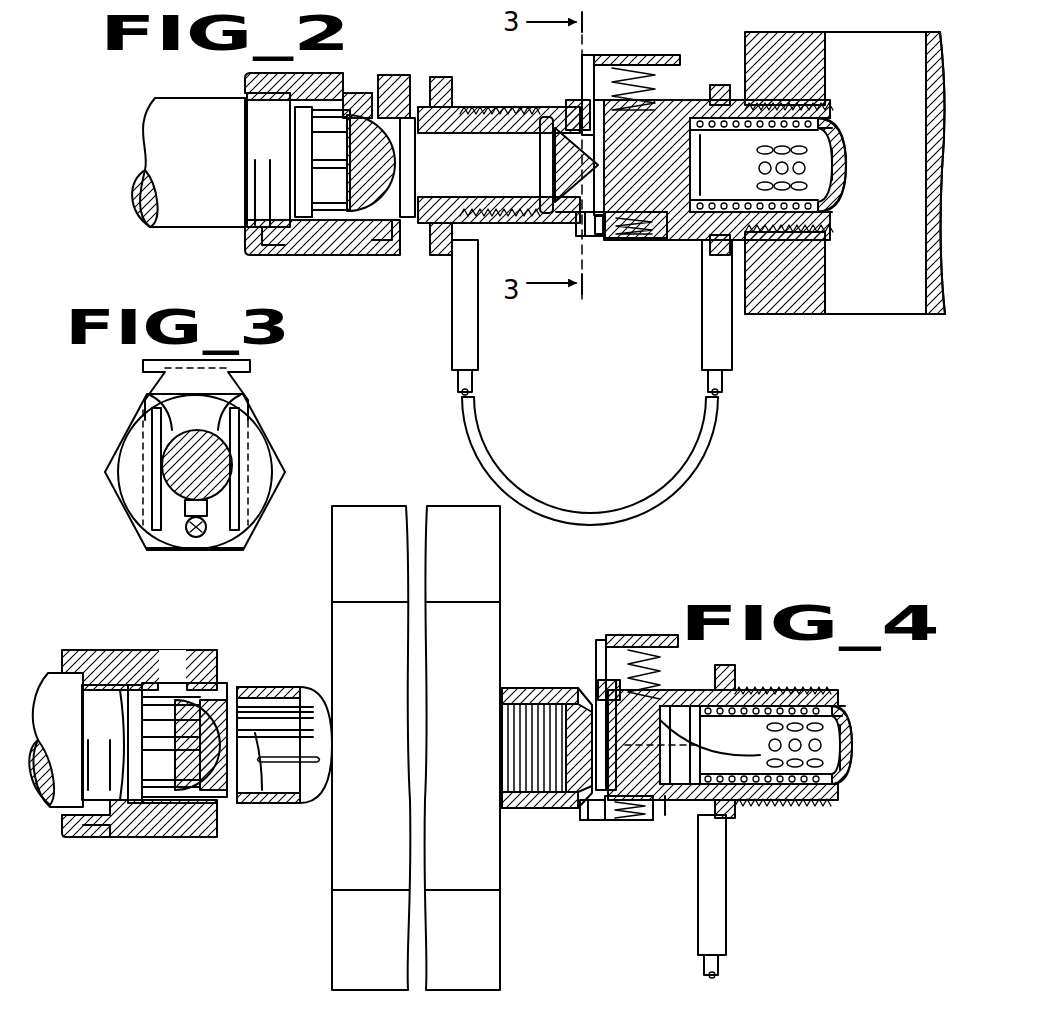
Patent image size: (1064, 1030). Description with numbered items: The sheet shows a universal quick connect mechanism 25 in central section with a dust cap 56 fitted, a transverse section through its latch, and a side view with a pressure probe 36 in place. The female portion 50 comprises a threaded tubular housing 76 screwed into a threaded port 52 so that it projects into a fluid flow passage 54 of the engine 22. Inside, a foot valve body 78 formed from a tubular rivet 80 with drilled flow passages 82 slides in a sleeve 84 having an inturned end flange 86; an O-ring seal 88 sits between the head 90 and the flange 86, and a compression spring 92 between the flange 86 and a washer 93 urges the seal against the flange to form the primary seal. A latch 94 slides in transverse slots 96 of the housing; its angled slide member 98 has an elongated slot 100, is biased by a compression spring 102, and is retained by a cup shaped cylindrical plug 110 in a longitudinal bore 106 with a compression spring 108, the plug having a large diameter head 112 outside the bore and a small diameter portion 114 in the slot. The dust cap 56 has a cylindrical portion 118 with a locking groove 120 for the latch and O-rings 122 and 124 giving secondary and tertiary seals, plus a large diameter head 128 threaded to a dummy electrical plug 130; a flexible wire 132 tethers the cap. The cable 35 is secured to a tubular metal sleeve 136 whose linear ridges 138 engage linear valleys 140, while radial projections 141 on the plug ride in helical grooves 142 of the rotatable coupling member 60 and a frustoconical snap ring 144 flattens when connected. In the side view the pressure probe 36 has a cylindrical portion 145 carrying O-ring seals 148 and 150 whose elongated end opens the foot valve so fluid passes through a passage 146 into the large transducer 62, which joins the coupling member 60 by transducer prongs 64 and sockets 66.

In FIG. 2, the engine 22 is at (805, 318).
In FIG. 2, the quick connect mechanism 25 is at (213, 251).
In FIG. 4, the quick connect mechanism 25 is at (754, 857).
In FIG. 2, the cable 35 is at (162, 103).
In FIG. 4, the cable 35 is at (64, 812).
In FIG. 4, the pressure probe 36 is at (503, 686).
In FIG. 2, the female portion 50 is at (701, 93).
In FIG. 4, the female portion 50 is at (796, 681).
In FIG. 2, the threaded port 52 is at (828, 245).
In FIG. 2, the fluid flow passage 54 is at (830, 318).
In FIG. 2, the dust cap 56 is at (441, 76).
In FIG. 2, the coupling member 60 is at (242, 80).
In FIG. 4, the coupling member 60 is at (117, 647).
In FIG. 4, the transducer 62 is at (365, 993).
In FIG. 4, the transducer prongs 64 is at (333, 744).
In FIG. 4, the sockets 66 is at (177, 743).
In FIG. 2, the threaded tubular housing 76 is at (720, 86).
In FIG. 3, the threaded tubular housing 76 is at (262, 452).
In FIG. 4, the threaded tubular housing 76 is at (722, 668).
In FIG. 2, the foot valve body 78 is at (851, 163).
In FIG. 4, the foot valve body 78 is at (858, 745).
In FIG. 2, the tubular rivet 80 is at (713, 198).
In FIG. 4, the tubular rivet 80 is at (770, 812).
In FIG. 2, the flow passages 82 is at (800, 168).
In FIG. 4, the flow passages 82 is at (832, 786).
In FIG. 2, the sleeve 84 is at (822, 220).
In FIG. 4, the sleeve 84 is at (835, 698).
In FIG. 2, the inturned end flange 86 is at (832, 120).
In FIG. 4, the inturned end flange 86 is at (846, 714).
In FIG. 2, the O-ring seal 88 is at (838, 130).
In FIG. 4, the O-ring seal 88 is at (852, 728).
In FIG. 2, the head 90 is at (848, 182).
In FIG. 4, the head 90 is at (854, 768).
In FIG. 2, the compression spring 92 is at (822, 120).
In FIG. 4, the compression spring 92 is at (812, 802).
In FIG. 2, the washer 93 is at (668, 235).
In FIG. 4, the washer 93 is at (668, 812).
In FIG. 2, the latch 94 is at (588, 51).
In FIG. 3, the latch 94 is at (258, 362).
In FIG. 4, the latch 94 is at (593, 641).
In FIG. 3, the transverse slots 96 is at (155, 412).
In FIG. 2, the angled slide member 98 is at (593, 102).
In FIG. 3, the angled slide member 98 is at (165, 385).
In FIG. 4, the angled slide member 98 is at (598, 662).
In FIG. 2, the elongated slot 100 is at (572, 108).
In FIG. 3, the elongated slot 100 is at (162, 436).
In FIG. 4, the elongated slot 100 is at (610, 692).
In FIG. 2, the compression spring 102 is at (640, 64).
In FIG. 4, the compression spring 102 is at (650, 634).
In FIG. 2, the longitudinal bore 106 is at (625, 240).
In FIG. 4, the longitudinal bore 106 is at (612, 822).
In FIG. 2, the compression spring 108 is at (660, 238).
In FIG. 4, the compression spring 108 is at (645, 822).
In FIG. 2, the cup shaped cylindrical plug 110 is at (600, 240).
In FIG. 4, the cup shaped cylindrical plug 110 is at (630, 824).
In FIG. 2, the large diameter head 112 is at (582, 232).
In FIG. 3, the large diameter head 112 is at (185, 530).
In FIG. 4, the large diameter head 112 is at (575, 808).
In FIG. 2, the small diameter portion 114 is at (590, 238).
In FIG. 3, the small diameter portion 114 is at (212, 552).
In FIG. 4, the small diameter portion 114 is at (600, 815).
In FIG. 2, the cylindrical portion 118 is at (598, 152).
In FIG. 2, the locking groove 120 is at (595, 205).
In FIG. 2, the O-ring 122 is at (697, 178).
In FIG. 2, the O-ring 124 is at (560, 228).
In FIG. 2, the large diameter head 128 is at (450, 242).
In FIG. 2, the dummy electrical plug 130 is at (410, 86).
In FIG. 2, the flexible wire 132 is at (473, 392).
In FIG. 4, the flexible wire 132 is at (722, 968).
In FIG. 2, the tubular metal sleeve 136 is at (330, 180).
In FIG. 2, the linear ridges 138 is at (300, 142).
In FIG. 4, the linear ridges 138 is at (148, 735).
In FIG. 2, the linear valleys 140 is at (416, 150).
In FIG. 4, the linear valleys 140 is at (255, 733).
In FIG. 2, the radial projections 141 is at (338, 92).
In FIG. 4, the radial projections 141 is at (255, 692).
In FIG. 2, the helical grooves 142 is at (370, 90).
In FIG. 4, the helical grooves 142 is at (173, 805).
In FIG. 2, the frustoconical snap ring 144 is at (286, 250).
In FIG. 4, the frustoconical snap ring 144 is at (118, 840).
In FIG. 4, the cylindrical portion 145 is at (737, 690).
In FIG. 4, the passage 146 is at (508, 755).
In FIG. 4, the O-ring seal 148 is at (690, 760).
In FIG. 4, the O-ring seal 150 is at (690, 740).